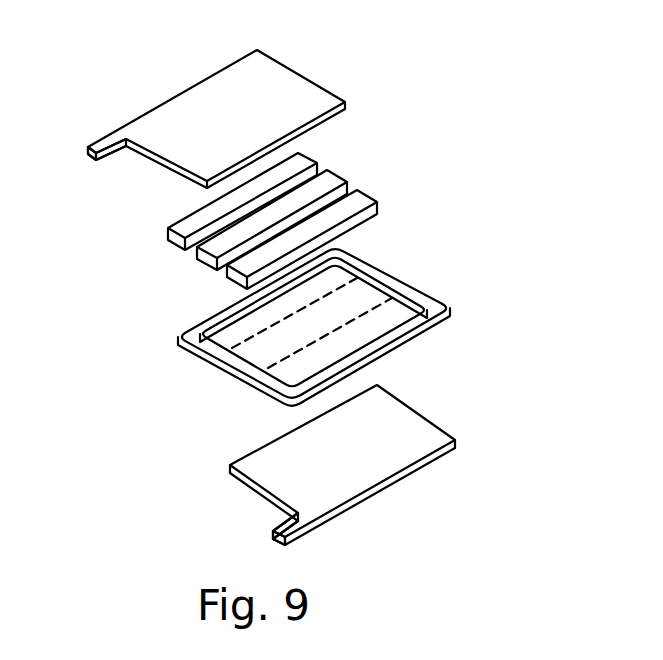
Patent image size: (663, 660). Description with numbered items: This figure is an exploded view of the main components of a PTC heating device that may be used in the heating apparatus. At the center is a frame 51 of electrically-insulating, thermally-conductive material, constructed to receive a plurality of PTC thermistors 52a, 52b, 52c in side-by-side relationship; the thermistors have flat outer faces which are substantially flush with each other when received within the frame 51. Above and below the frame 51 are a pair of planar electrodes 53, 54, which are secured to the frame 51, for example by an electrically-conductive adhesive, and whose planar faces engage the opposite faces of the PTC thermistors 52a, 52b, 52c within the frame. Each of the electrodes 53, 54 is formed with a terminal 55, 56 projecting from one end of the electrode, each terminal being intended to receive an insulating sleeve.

The frame 51 is at (408, 290).
The PTC thermistor 52a is at (168, 232).
The PTC thermistor 52b is at (200, 257).
The PTC thermistor 52c is at (228, 277).
The planar electrode 53 is at (295, 105).
The planar electrode 54 is at (413, 412).
The terminal 55 is at (100, 139).
The terminal 56 is at (293, 540).